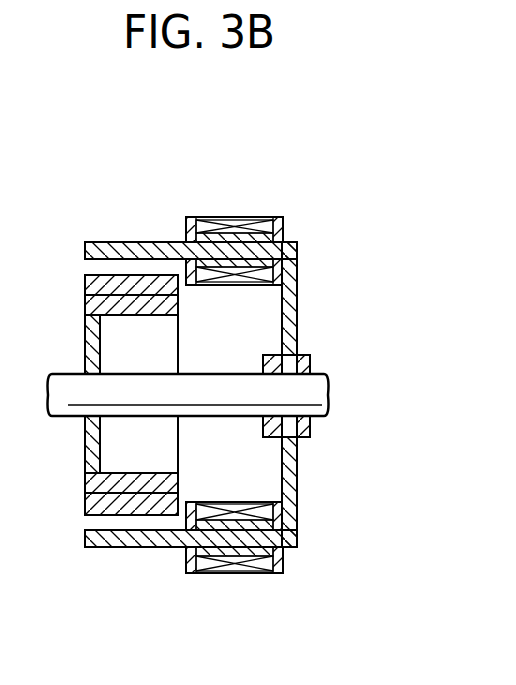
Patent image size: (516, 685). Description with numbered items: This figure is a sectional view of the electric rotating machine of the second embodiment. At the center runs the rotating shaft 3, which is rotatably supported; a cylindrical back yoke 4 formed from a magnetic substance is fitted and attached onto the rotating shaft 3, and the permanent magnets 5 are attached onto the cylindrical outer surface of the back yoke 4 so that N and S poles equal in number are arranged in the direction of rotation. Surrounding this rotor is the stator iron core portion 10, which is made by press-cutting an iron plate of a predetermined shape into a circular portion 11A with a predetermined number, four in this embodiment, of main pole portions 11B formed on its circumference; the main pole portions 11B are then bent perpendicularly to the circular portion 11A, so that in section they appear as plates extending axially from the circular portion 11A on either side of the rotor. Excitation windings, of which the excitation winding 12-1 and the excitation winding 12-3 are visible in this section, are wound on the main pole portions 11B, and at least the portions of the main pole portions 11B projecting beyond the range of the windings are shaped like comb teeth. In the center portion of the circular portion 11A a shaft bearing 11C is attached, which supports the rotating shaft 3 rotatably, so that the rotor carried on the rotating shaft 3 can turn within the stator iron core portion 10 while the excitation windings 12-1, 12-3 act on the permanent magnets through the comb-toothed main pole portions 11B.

The rotating shaft 3 is at (68, 410).
The back yoke 4 is at (92, 303).
The permanent magnet 5 is at (90, 282).
The stator iron core portion 10 is at (223, 397).
The circular portion 11A is at (298, 307).
The main pole portions 11B is at (115, 242).
The shaft bearing 11C is at (305, 358).
The excitation winding 12-1 is at (230, 217).
The excitation winding 12-3 is at (232, 562).